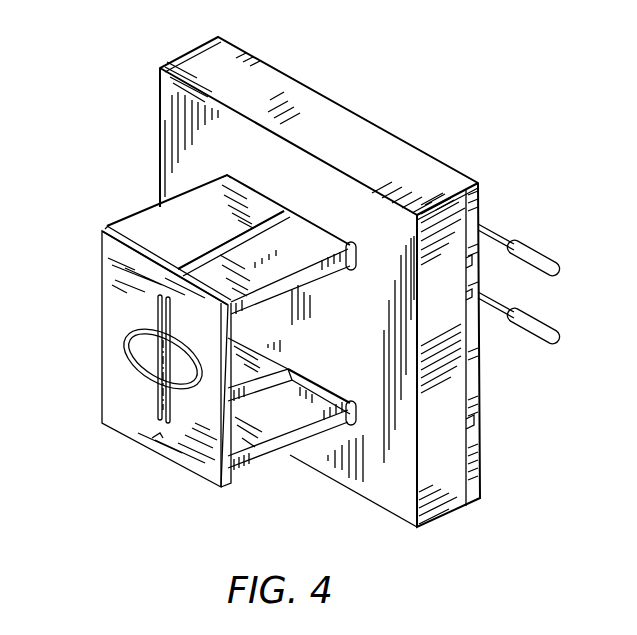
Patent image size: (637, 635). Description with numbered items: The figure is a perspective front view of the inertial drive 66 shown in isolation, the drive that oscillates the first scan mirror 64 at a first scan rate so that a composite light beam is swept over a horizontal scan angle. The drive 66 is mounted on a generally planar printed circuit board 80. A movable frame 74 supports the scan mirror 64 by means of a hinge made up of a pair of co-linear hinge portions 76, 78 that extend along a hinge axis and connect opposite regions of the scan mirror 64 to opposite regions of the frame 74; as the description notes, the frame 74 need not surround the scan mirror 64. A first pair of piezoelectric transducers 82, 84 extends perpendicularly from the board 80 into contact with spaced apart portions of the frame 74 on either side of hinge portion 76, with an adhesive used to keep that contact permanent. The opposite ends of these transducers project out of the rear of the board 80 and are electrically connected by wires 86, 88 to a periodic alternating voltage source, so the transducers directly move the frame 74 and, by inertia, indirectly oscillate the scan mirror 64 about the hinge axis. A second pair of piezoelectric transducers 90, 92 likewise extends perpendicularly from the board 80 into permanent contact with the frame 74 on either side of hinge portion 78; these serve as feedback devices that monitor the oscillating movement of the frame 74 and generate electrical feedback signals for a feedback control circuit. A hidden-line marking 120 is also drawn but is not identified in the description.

The inertial drive 66 is at (153, 33).
The printed circuit board 80 is at (372, 127).
The wire 86 is at (538, 253).
The wire 88 is at (532, 334).
The movable frame 74 is at (110, 280).
The hinge portion 76 is at (157, 316).
The hinge portion 78 is at (171, 412).
The first scan mirror 64 is at (150, 360).
The center line 120 is at (133, 450).
The piezoelectric transducer 82 is at (163, 230).
The piezoelectric transducer 84 is at (268, 270).
The piezoelectric transducer 90 is at (252, 362).
The piezoelectric transducer 92 is at (254, 462).